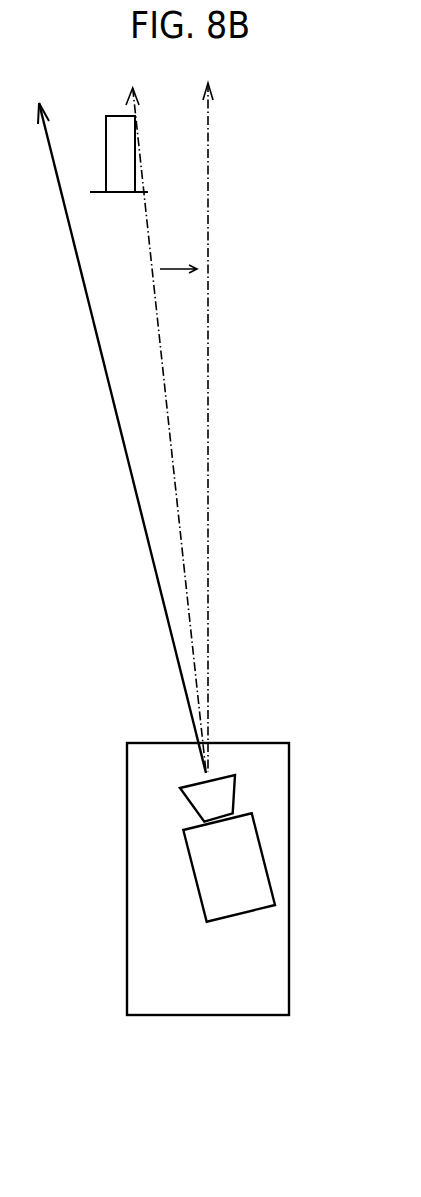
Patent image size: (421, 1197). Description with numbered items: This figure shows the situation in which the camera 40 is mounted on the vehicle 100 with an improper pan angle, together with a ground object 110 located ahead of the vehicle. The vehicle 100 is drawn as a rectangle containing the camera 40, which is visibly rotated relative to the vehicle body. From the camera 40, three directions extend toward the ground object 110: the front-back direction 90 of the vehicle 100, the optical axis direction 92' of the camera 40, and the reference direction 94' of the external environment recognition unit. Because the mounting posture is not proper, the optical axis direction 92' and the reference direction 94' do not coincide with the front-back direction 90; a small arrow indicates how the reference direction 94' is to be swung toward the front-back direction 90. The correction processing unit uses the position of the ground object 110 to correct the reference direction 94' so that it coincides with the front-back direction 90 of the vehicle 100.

The ground object 110 is at (120, 115).
The front-back direction 90 is at (208, 161).
The optical axis direction 92' is at (115, 438).
The reference direction 94' is at (199, 430).
The camera 40 is at (243, 870).
The vehicle 100 is at (207, 1017).